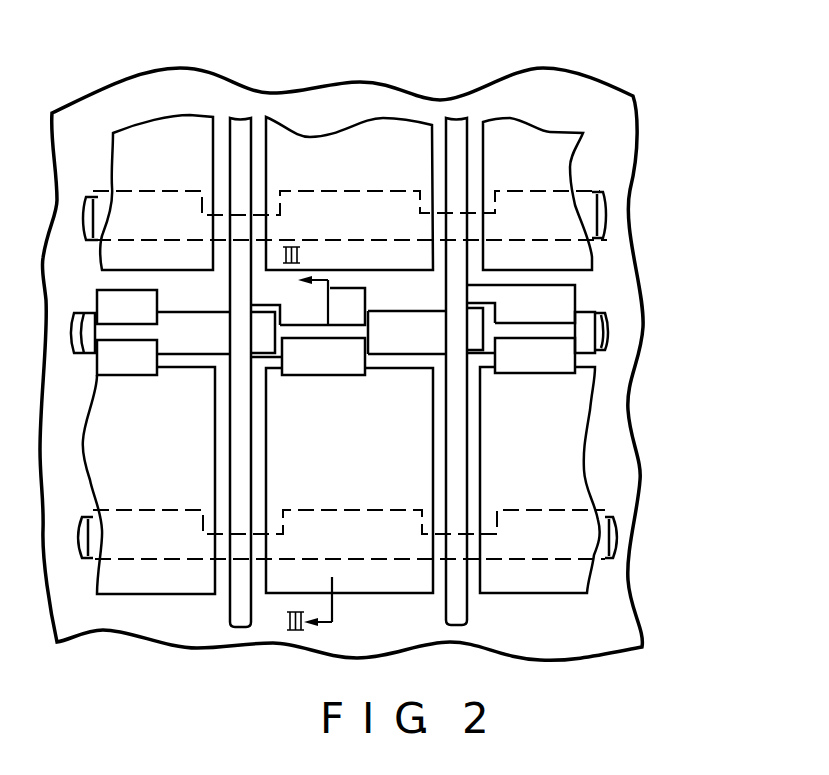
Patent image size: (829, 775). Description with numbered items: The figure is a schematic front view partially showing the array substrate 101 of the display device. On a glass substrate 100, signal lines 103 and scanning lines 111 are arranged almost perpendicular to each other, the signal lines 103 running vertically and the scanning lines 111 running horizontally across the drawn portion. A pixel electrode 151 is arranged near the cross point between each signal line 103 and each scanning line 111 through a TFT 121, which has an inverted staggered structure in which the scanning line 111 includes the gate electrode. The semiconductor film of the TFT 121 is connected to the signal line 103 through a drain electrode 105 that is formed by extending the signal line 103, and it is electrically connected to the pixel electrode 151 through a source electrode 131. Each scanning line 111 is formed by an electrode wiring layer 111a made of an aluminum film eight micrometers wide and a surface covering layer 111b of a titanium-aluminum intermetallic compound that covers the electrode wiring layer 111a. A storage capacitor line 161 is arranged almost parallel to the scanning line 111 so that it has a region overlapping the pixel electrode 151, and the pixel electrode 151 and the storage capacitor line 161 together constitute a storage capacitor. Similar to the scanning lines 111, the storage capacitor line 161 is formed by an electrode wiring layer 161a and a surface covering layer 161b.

The glass substrate 100 is at (630, 127).
The array substrate 101 is at (594, 75).
The signal line 103 is at (240, 118).
The drain electrode 105 is at (540, 298).
The scanning line 111 is at (713, 267).
The electrode wiring layer 111a is at (608, 325).
The surface covering layer 111b is at (600, 298).
The TFT 121 is at (568, 296).
The source electrode 131 is at (537, 360).
The pixel electrode 151 is at (570, 438).
The storage capacitor line 161 is at (715, 495).
The electrode wiring layer 161a is at (612, 525).
The surface covering layer 161b is at (600, 546).